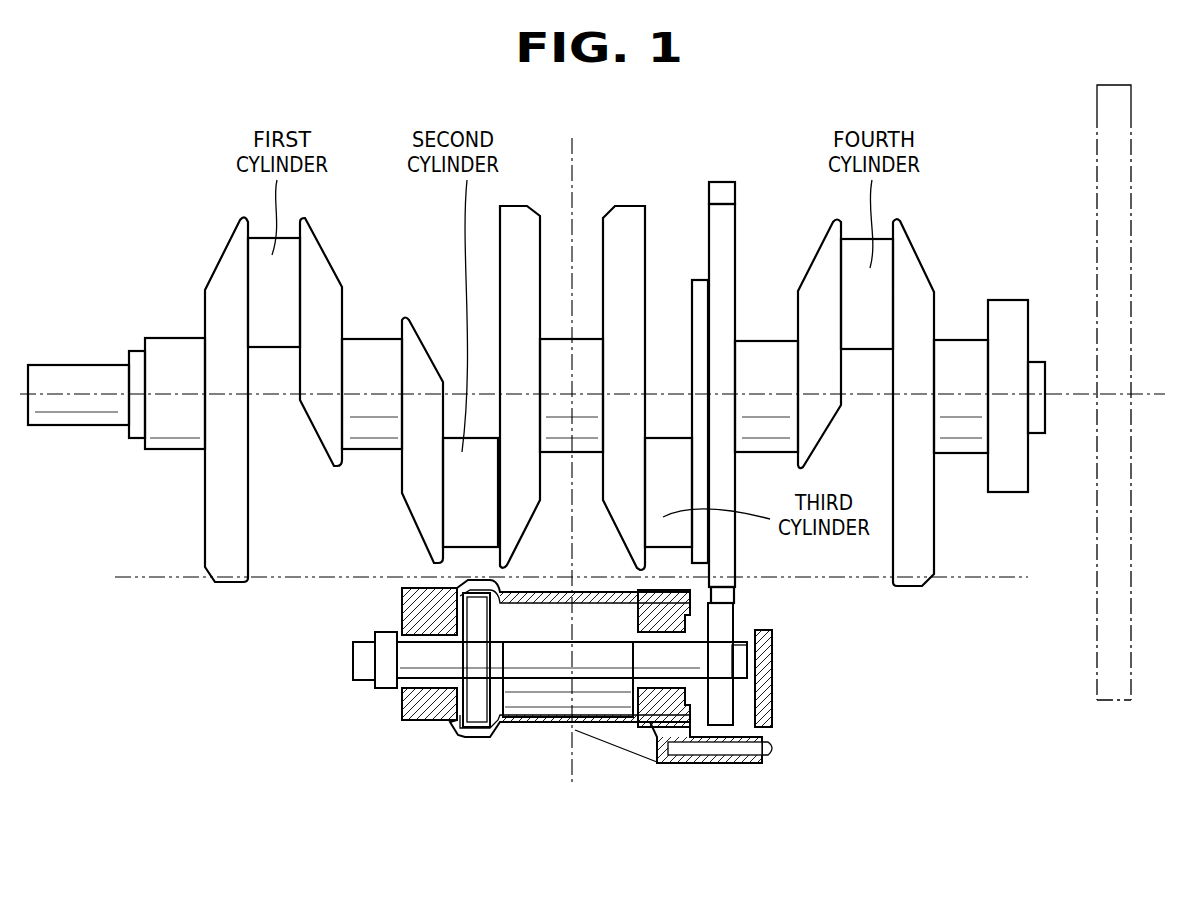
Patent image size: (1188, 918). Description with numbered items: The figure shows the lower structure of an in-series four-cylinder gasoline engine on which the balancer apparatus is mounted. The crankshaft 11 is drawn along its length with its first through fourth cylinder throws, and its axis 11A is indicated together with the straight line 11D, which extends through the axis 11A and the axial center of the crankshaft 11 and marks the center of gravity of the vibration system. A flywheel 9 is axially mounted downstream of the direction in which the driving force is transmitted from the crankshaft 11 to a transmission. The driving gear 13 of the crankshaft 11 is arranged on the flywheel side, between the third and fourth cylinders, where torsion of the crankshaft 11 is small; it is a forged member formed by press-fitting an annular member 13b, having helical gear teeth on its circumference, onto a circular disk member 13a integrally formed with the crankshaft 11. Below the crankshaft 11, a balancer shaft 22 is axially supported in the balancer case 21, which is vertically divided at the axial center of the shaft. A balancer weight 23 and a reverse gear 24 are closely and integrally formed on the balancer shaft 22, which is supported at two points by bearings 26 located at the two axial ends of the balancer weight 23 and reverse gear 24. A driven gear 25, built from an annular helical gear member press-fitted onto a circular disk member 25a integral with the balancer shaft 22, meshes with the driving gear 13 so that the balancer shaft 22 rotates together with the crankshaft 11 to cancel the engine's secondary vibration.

The flywheel 9 is at (1122, 664).
The crankshaft 11 is at (592, 396).
The axis of the crankshaft 11A is at (572, 394).
The straight line 11D is at (576, 165).
The driving gear 13 is at (756, 366).
The circular disk member 13a is at (737, 262).
The annular member 13b is at (737, 198).
The balancer case 21 is at (668, 763).
The balancer shaft 22 is at (697, 670).
The balancer weight 23 is at (540, 698).
The reverse gear 24 is at (477, 725).
The driven gear 25 is at (773, 665).
The circular disk member 25a is at (762, 683).
The bearings 26 is at (422, 637).